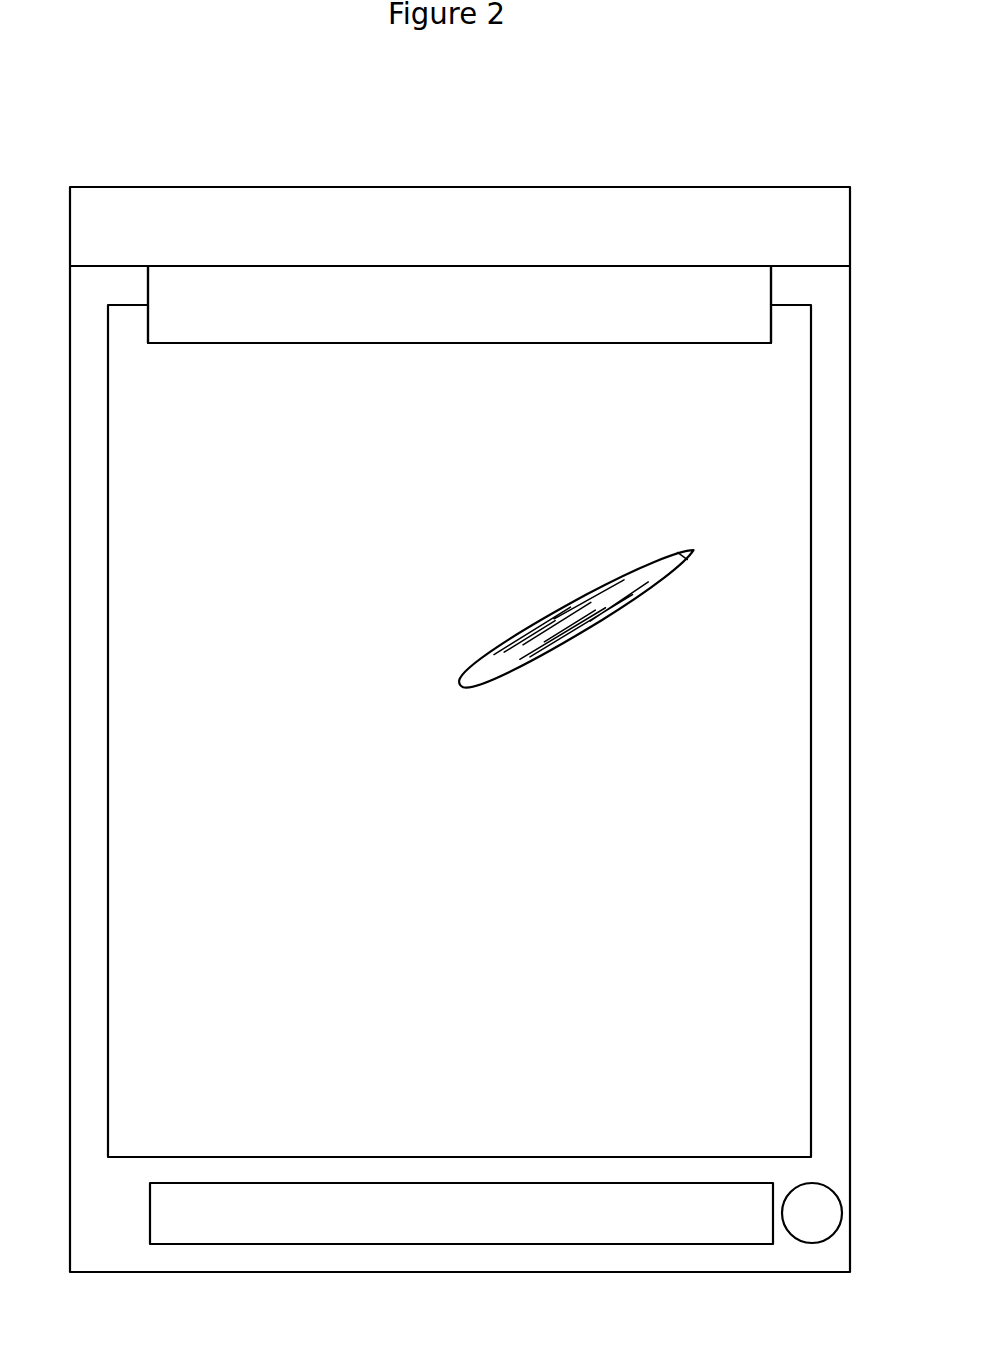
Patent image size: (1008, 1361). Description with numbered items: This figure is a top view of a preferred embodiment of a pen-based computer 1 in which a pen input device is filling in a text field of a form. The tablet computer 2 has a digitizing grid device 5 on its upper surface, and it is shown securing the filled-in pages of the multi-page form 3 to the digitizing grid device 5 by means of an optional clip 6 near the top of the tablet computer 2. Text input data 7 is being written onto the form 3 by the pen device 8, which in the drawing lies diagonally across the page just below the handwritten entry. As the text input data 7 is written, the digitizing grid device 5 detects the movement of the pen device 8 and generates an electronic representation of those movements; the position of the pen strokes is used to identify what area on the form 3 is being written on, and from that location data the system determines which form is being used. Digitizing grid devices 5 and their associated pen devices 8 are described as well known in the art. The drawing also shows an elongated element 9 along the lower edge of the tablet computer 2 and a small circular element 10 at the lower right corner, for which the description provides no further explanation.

The pen-based computer 1 is at (658, 160).
The tablet computer 2 is at (197, 217).
The form 3 is at (155, 1142).
The digitizing grid device 5 is at (830, 292).
The clip 6 is at (390, 295).
The text input data 7 is at (507, 527).
The pen device 8 is at (473, 667).
The bottom tray 9 is at (410, 1205).
The circular marker 10 is at (802, 1203).